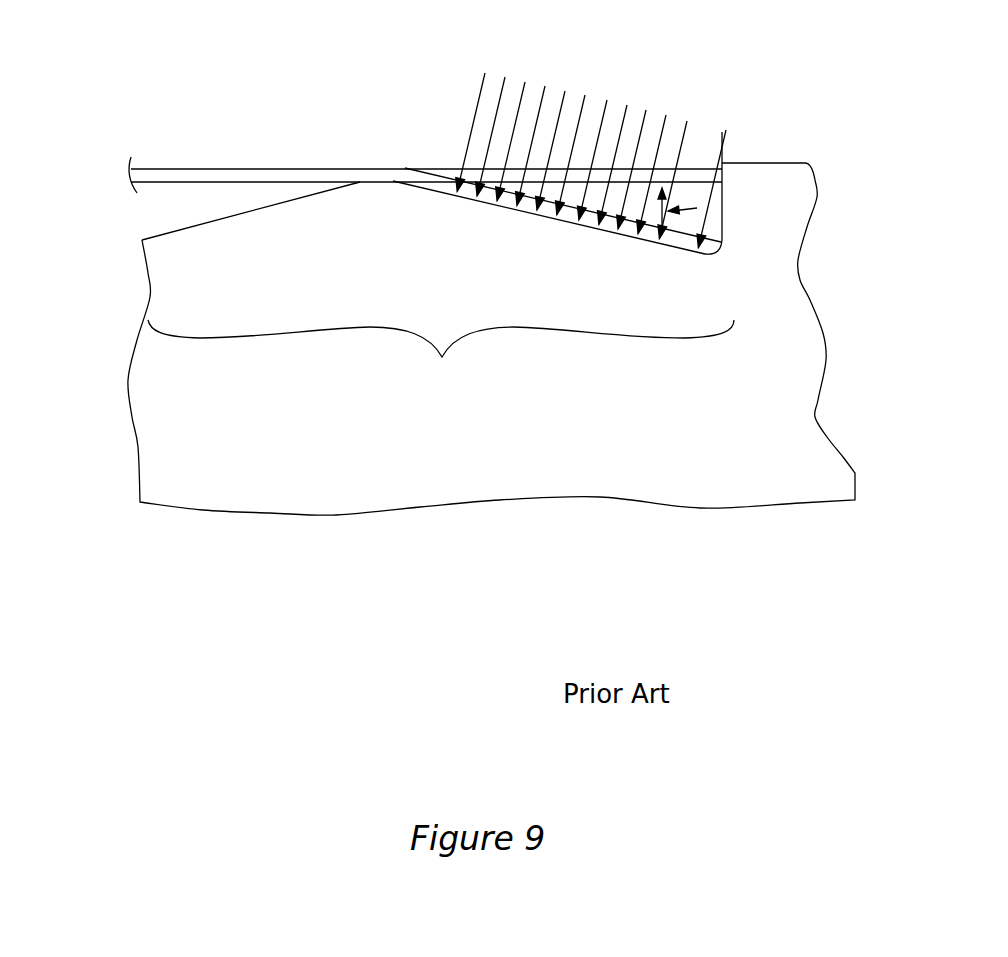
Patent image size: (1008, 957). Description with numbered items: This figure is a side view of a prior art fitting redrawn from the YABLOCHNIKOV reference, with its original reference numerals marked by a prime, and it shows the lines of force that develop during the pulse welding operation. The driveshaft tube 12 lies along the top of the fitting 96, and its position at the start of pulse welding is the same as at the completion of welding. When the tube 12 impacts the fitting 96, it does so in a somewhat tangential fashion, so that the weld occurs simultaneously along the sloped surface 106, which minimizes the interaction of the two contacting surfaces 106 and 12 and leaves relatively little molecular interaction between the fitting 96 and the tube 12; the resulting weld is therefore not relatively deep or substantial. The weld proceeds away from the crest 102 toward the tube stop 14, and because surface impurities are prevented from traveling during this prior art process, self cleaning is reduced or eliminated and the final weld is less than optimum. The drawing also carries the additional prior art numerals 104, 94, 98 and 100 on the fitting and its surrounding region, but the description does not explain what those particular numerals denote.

The driveshaft tube 12 is at (247, 168).
The crest 102 is at (377, 168).
The sloped surface of substrate 104 is at (160, 235).
The sloped surface 106 is at (566, 91).
The direction of light 94 is at (697, 208).
The tube stop 14 is at (722, 163).
The end face 98 is at (723, 210).
The fitting 96 is at (815, 307).
The region of substrate 100 is at (441, 362).